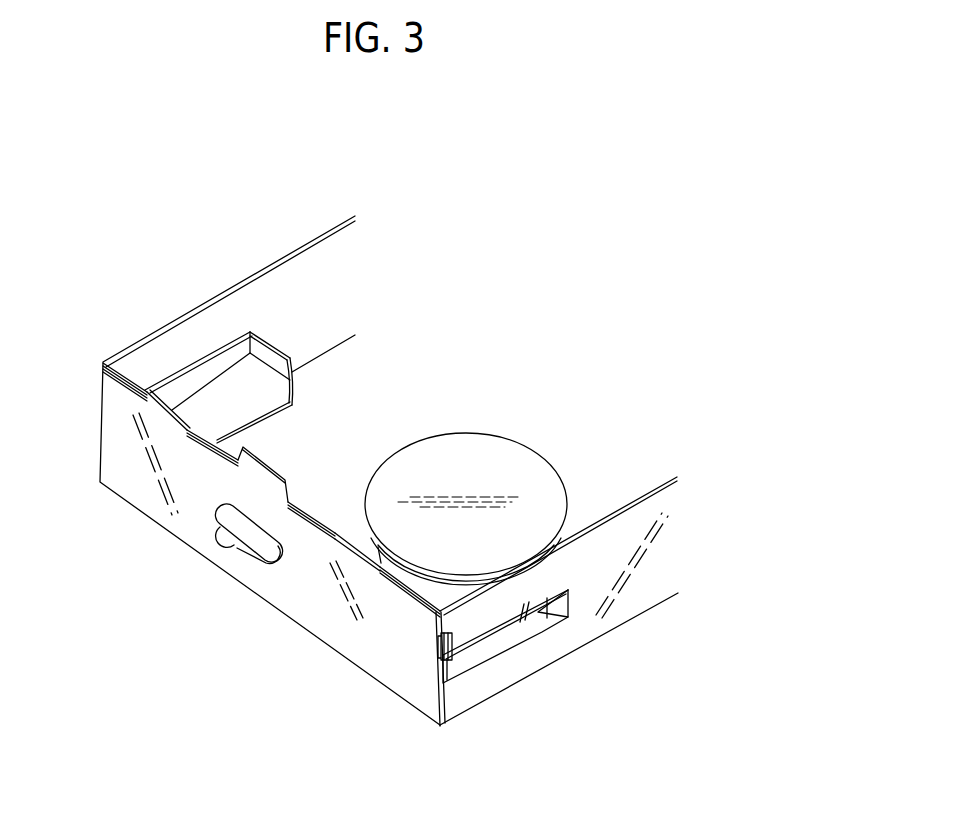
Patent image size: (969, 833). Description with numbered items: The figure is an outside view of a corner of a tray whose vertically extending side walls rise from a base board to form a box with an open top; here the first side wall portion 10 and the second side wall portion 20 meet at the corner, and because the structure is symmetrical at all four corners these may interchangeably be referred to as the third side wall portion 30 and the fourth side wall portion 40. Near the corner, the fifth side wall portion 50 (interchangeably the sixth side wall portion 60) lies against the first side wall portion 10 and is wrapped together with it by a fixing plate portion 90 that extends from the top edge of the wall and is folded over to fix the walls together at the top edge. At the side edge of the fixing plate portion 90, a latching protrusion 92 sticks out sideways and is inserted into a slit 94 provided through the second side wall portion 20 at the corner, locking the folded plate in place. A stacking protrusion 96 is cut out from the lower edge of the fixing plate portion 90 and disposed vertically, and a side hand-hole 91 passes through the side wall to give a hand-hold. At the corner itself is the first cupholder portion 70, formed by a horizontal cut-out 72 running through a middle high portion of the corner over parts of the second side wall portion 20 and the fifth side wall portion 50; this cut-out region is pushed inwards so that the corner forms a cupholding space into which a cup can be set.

The first side wall portion 10 is at (270, 470).
The third side wall portion 30 is at (318, 598).
The second side wall portion 20 is at (572, 601).
The fourth side wall portion 40 is at (637, 583).
The fifth side wall portion 50 is at (412, 582).
The sixth side wall portion 60 is at (425, 592).
The first cupholder portion 70 is at (273, 357).
The horizontal cut-out 72 is at (232, 378).
The fixing plate portion 90 is at (432, 602).
The side hand-hole 91 is at (250, 530).
The latching protrusion 92 is at (447, 651).
The slit 94 is at (437, 656).
The stacking protrusion 96 is at (250, 470).